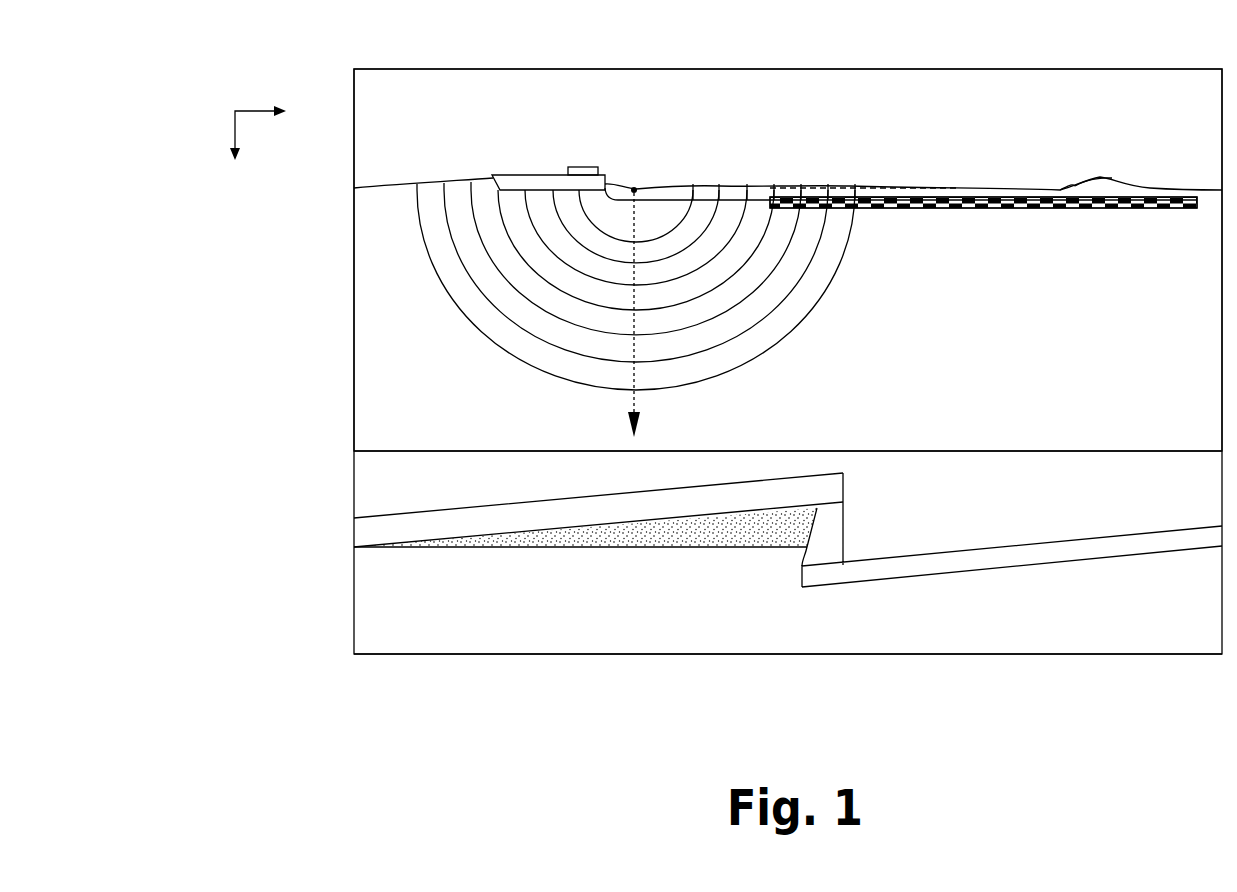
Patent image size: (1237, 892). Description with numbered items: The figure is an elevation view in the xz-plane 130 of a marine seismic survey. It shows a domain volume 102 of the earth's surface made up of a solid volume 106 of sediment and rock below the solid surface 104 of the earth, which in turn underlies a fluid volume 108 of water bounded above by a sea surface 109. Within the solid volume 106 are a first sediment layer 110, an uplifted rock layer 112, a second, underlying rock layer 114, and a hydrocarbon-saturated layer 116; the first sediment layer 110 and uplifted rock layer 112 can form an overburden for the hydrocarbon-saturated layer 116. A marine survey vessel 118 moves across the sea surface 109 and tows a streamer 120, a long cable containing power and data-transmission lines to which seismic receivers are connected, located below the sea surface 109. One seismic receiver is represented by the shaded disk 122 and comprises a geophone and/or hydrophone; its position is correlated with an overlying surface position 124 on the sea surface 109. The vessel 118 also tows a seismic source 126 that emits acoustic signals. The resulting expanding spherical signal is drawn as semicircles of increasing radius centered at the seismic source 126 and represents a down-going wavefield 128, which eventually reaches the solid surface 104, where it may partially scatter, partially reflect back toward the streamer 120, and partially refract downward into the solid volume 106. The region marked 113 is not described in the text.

The domain volume 102 is at (262, 268).
The solid surface 104 is at (417, 451).
The solid volume 106 is at (374, 470).
The fluid volume 108 is at (374, 347).
The sea surface 109 is at (926, 187).
The first sediment layer 110 is at (1081, 508).
The uplifted rock layer 112 is at (374, 533).
The edge region 113 is at (1071, 185).
The second underlying rock layer 114 is at (492, 640).
The hydrocarbon-saturated layer 116 is at (575, 548).
The marine survey vessel 118 is at (578, 175).
The streamer 120 is at (976, 218).
The seismic receiver 122 is at (1115, 208).
The surface position 124 is at (1113, 180).
The seismic source 126 is at (636, 189).
The down-going wavefield 128 is at (828, 300).
The xz-plane 130 is at (232, 111).